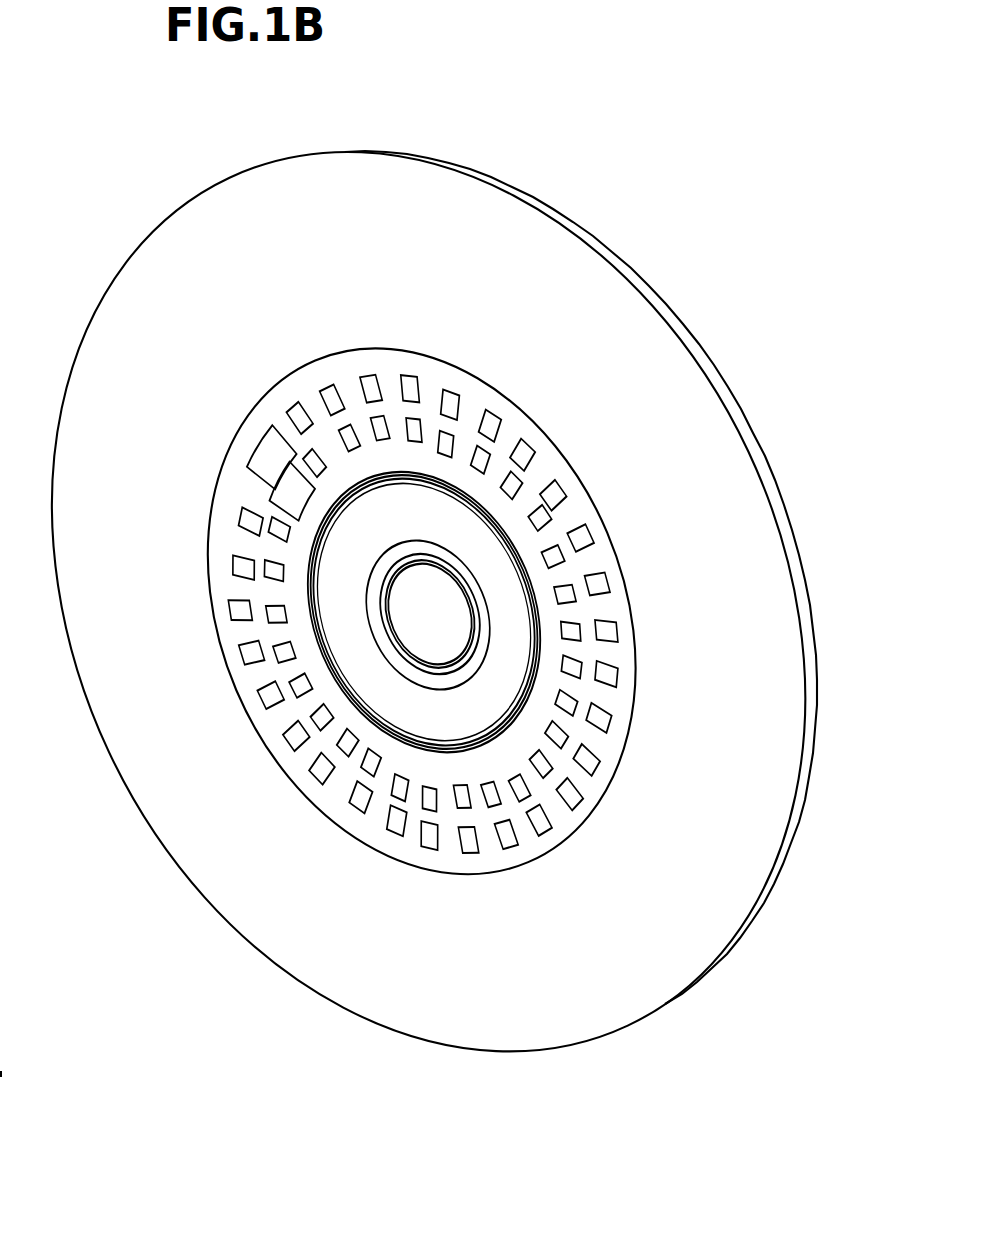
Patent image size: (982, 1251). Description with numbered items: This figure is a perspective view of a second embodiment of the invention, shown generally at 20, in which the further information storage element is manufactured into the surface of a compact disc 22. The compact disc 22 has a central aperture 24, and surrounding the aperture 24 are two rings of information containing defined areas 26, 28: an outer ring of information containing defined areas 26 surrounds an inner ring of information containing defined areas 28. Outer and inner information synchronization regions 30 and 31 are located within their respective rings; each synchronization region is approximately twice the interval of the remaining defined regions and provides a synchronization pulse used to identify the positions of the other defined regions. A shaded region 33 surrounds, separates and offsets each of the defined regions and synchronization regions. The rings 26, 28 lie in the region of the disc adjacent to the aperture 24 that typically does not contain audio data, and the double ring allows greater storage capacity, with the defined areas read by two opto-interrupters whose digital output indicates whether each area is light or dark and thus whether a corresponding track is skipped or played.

The alternate embodiment 20 is at (473, 602).
The compact disc 22 is at (147, 758).
The aperture 24 is at (440, 597).
The outer ring of information containing defined areas 26 is at (552, 496).
The inner ring of information containing defined areas 28 is at (571, 630).
The outer information synchronization region 30 is at (288, 497).
The inner information synchronization region 31 is at (267, 455).
The shaded region 33 is at (415, 364).